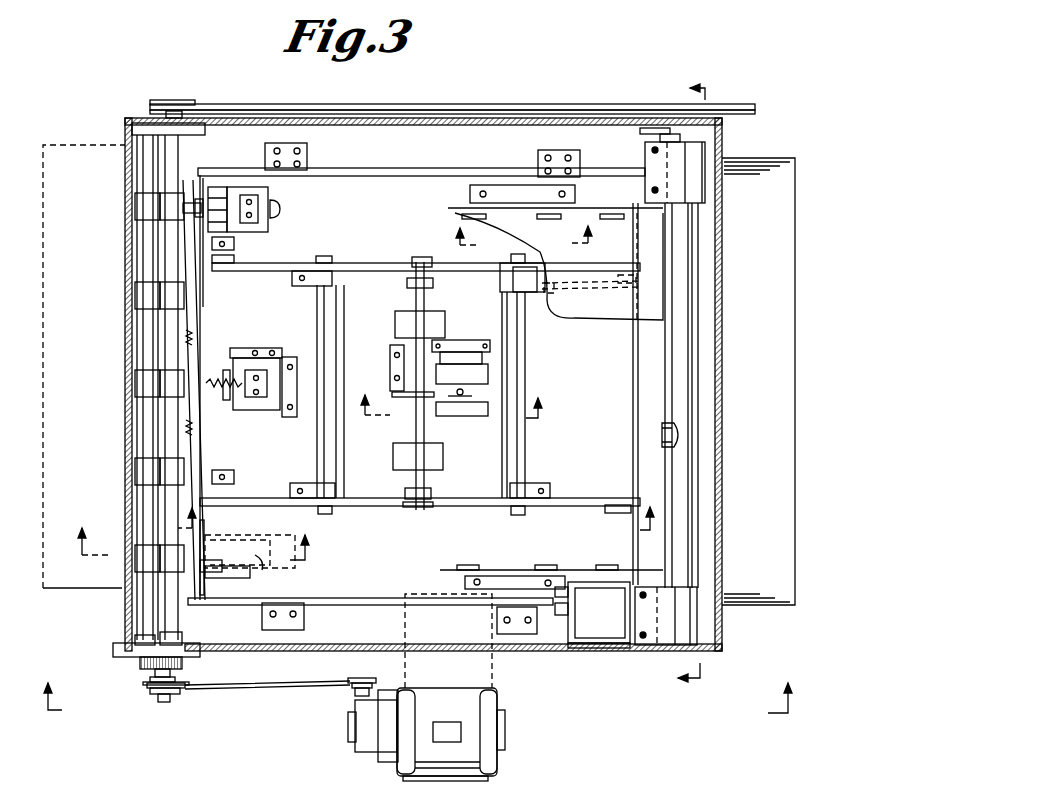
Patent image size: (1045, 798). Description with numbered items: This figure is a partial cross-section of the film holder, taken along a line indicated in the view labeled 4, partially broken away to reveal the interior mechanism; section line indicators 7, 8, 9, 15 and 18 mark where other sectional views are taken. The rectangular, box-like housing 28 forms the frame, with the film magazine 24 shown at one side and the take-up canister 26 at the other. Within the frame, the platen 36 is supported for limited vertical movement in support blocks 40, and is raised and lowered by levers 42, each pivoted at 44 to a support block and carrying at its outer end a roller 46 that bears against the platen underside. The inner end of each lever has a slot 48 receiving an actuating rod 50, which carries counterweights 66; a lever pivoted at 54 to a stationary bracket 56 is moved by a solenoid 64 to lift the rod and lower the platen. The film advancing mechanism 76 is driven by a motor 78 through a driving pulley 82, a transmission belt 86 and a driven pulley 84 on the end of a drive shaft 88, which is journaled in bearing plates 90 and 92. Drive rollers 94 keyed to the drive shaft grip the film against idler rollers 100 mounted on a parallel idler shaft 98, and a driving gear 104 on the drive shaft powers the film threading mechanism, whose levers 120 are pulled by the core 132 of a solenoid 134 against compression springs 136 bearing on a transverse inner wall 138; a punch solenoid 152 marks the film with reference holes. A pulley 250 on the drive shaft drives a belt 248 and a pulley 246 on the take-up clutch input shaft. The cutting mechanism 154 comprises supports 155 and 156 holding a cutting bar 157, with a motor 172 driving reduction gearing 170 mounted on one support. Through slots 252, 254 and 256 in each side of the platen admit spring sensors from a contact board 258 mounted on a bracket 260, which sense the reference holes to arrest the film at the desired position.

The section line 4- 4 is at (413, 697).
The section line 7- 7 is at (680, 392).
The section line 8- 8 is at (423, 529).
The section line 9- 9 is at (194, 541).
The section line 15- 15 is at (464, 393).
The section line 18- 18 is at (525, 236).
The magazine 24 is at (62, 590).
The take-up canister 26 is at (752, 605).
The housing 28 is at (525, 650).
The platen 36 is at (605, 306).
The support blocks 40 is at (305, 285).
The levers 42 is at (240, 268).
The pivot 44 is at (333, 263).
The roller 46 is at (235, 259).
The slot 48 is at (434, 272).
The actuating rod 50 is at (416, 286).
The pivot 54 is at (397, 398).
The stationary bracket 56 is at (390, 358).
The solenoid 64 is at (490, 372).
The counterweights 66 is at (446, 320).
The film advancing mechanism 76 is at (138, 324).
The motor 78 is at (462, 715).
The driving pulley 82 is at (356, 680).
The driven pulley 84 is at (185, 690).
The transmission belt 86 is at (272, 687).
The drive shaft 88 is at (164, 702).
The bearing plate 90 is at (120, 657).
The bearing plate 92 is at (133, 128).
The drive rollers 94 is at (170, 195).
The idler shaft 98 is at (138, 157).
The idler rollers 100 is at (140, 200).
The driving gear 104 is at (183, 665).
The levers 120 is at (190, 236).
The core 132 is at (225, 400).
The solenoid 134 is at (268, 417).
The compression springs 136 is at (205, 340).
The transverse inner wall 138 is at (205, 325).
The solenoid 152 is at (268, 195).
The cutting mechanism 154 is at (705, 222).
The support 155 is at (665, 645).
The support 156 is at (700, 156).
The cutting bar 157 is at (698, 290).
The reduction gearing 170 is at (628, 648).
The motor 172 is at (623, 614).
The pulley 246 is at (632, 110).
The belt 248 is at (260, 105).
The pulley 250 is at (186, 101).
The through slot 252 is at (455, 216).
The through slot 254 is at (542, 220).
The through slot 256 is at (618, 200).
The contact board 258 is at (510, 203).
The bracket 260 is at (470, 190).